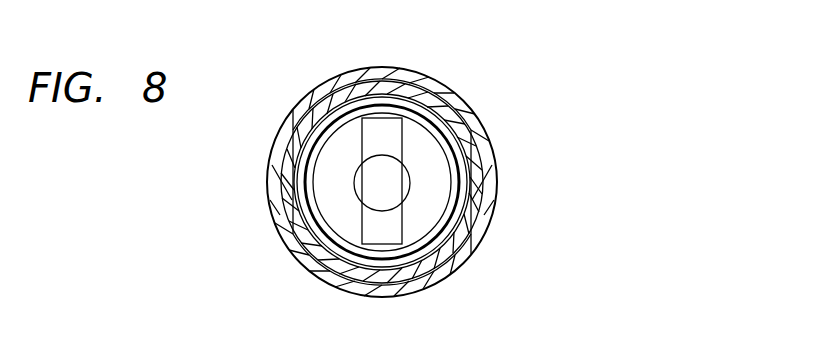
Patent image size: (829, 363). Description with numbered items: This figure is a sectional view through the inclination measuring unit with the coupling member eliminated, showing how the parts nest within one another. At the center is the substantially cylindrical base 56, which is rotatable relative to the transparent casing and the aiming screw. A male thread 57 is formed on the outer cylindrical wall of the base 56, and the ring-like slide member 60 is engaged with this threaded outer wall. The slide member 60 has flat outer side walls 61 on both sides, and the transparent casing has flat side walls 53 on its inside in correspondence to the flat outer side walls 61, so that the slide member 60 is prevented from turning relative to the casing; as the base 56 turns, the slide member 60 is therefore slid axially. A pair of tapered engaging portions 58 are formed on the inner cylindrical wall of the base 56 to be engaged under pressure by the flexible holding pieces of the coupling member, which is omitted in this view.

The flat side walls 53 is at (287, 203).
The base 56 is at (308, 103).
The male thread 57 is at (418, 103).
The tapered engaging portions 58 is at (387, 135).
The slide member 60 is at (473, 240).
The flat outer side walls 61 is at (275, 158).